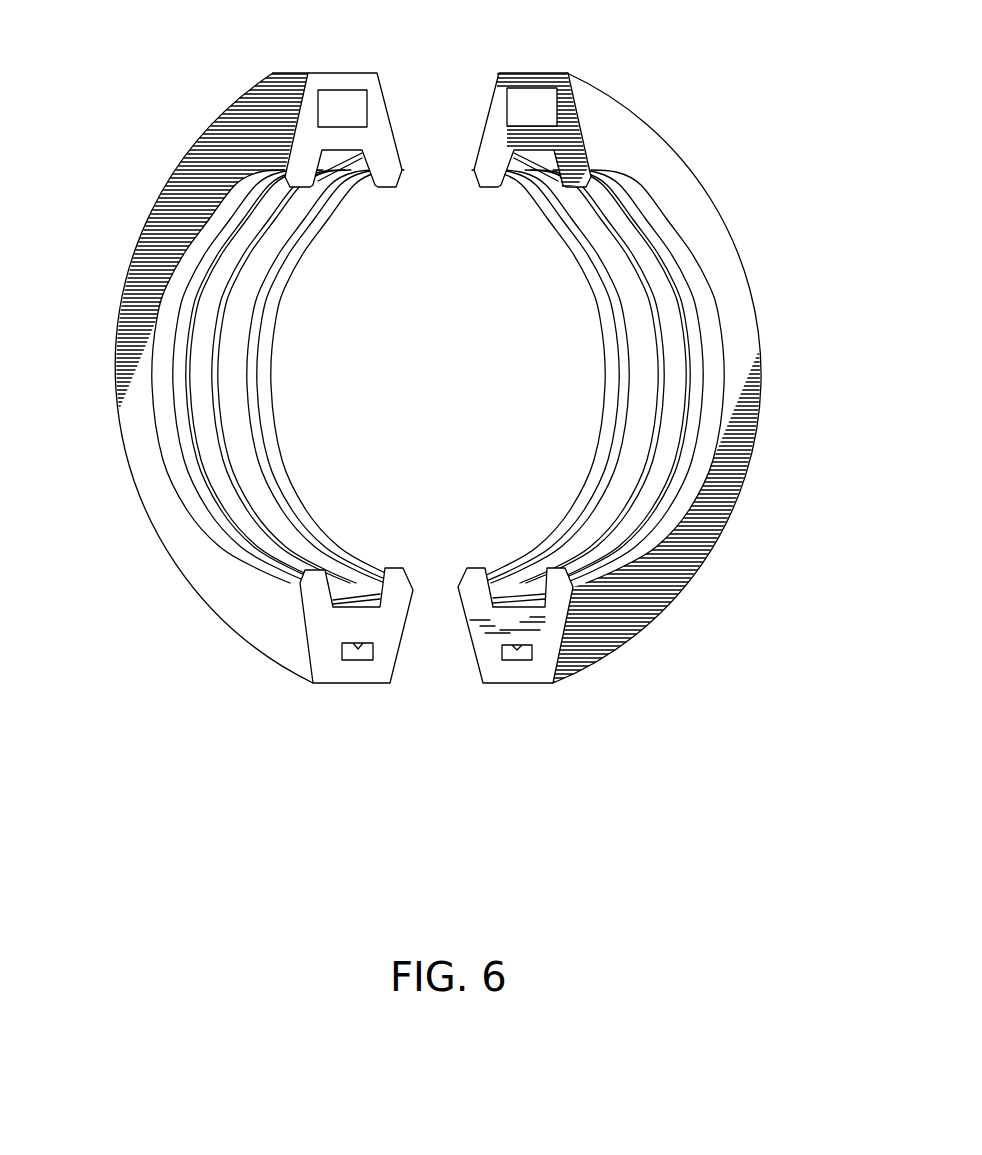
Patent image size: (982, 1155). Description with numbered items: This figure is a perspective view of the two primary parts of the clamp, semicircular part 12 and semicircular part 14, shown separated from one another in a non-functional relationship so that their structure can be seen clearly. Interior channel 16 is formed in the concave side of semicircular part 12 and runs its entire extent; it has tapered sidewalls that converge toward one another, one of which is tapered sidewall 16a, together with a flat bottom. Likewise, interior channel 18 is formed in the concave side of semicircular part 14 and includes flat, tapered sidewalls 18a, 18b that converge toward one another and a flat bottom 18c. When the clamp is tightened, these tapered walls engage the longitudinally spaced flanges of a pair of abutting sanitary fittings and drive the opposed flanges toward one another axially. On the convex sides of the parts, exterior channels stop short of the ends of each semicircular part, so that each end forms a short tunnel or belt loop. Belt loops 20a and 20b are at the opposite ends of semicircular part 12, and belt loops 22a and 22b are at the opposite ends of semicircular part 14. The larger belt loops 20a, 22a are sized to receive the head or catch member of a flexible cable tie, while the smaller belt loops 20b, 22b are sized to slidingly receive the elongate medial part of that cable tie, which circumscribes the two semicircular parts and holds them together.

The semicircular part 12 is at (155, 183).
The semicircular part 14 is at (739, 217).
The interior channel 16 is at (248, 360).
The tapered sidewall 16a is at (293, 207).
The interior channel 18 is at (625, 345).
The tapered sidewall 18a is at (518, 200).
The tapered sidewall 18b is at (541, 178).
The flat bottom 18c is at (520, 153).
The belt loop 20a is at (340, 125).
The belt loop 20b is at (345, 655).
The belt loop 22a is at (510, 108).
The belt loop 22b is at (515, 655).